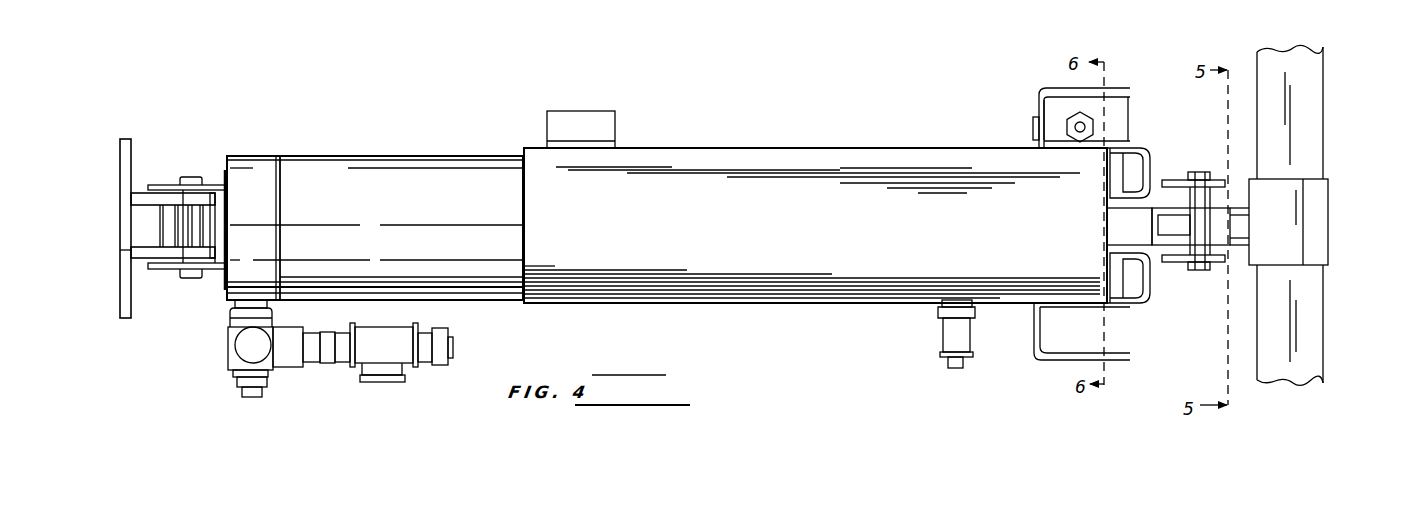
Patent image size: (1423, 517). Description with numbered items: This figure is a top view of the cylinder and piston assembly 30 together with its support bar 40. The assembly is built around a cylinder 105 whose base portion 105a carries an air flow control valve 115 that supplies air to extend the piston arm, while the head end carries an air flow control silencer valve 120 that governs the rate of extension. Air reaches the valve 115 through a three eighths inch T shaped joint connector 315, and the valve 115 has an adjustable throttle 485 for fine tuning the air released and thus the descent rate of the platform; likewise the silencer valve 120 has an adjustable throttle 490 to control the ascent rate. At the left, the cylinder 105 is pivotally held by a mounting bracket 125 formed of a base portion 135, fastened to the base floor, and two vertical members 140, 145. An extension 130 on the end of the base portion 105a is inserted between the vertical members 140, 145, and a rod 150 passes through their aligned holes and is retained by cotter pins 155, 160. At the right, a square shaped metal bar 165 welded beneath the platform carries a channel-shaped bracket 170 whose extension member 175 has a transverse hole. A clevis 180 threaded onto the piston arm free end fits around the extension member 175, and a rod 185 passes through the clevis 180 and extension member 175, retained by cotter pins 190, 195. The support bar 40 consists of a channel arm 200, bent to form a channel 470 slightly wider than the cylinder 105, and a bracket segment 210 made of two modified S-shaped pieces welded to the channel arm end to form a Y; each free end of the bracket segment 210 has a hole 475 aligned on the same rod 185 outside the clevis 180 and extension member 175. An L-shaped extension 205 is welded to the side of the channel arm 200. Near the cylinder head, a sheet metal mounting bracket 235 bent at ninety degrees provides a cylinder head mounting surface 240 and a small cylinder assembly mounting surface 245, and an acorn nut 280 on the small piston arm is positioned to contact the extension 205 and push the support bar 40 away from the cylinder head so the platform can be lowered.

The cylinder and piston assembly 30 is at (436, 108).
The support bar 40 is at (890, 144).
The cylinder 105 is at (485, 180).
The base portion 105a is at (257, 175).
The air flow control valve 115 is at (290, 355).
The air flow control silencer valve 120 is at (966, 340).
The mounting bracket 125 is at (104, 152).
The extension 130 is at (181, 225).
The base portion 135 is at (126, 255).
The vertical member 140 is at (140, 258).
The vertical member 145 is at (141, 200).
The rod 150 is at (190, 280).
The cotter pin 155 is at (214, 268).
The cotter pin 160 is at (200, 187).
The square shaped metal bar 165 is at (1313, 138).
The bracket 170 is at (1317, 227).
The extension member 175 is at (1241, 180).
The clevis 180 is at (1146, 237).
The rod 185 is at (1185, 172).
The cotter pin 190 is at (1222, 263).
The cotter pin 195 is at (1172, 182).
The channel arm 200 is at (707, 158).
The extension 205 is at (593, 125).
The bracket segment 210 is at (1126, 160).
The mounting bracket 235 is at (1057, 84).
The cylinder head mounting surface 240 is at (1035, 112).
The small cylinder assembly mounting surface 245 is at (1056, 110).
The acorn nut 280 is at (1083, 120).
The T shaped joint connector 315 is at (393, 357).
The channel 470 is at (513, 208).
The hole 475 is at (1232, 214).
The adjustable throttle 485 is at (252, 392).
The adjustable throttle 490 is at (955, 362).